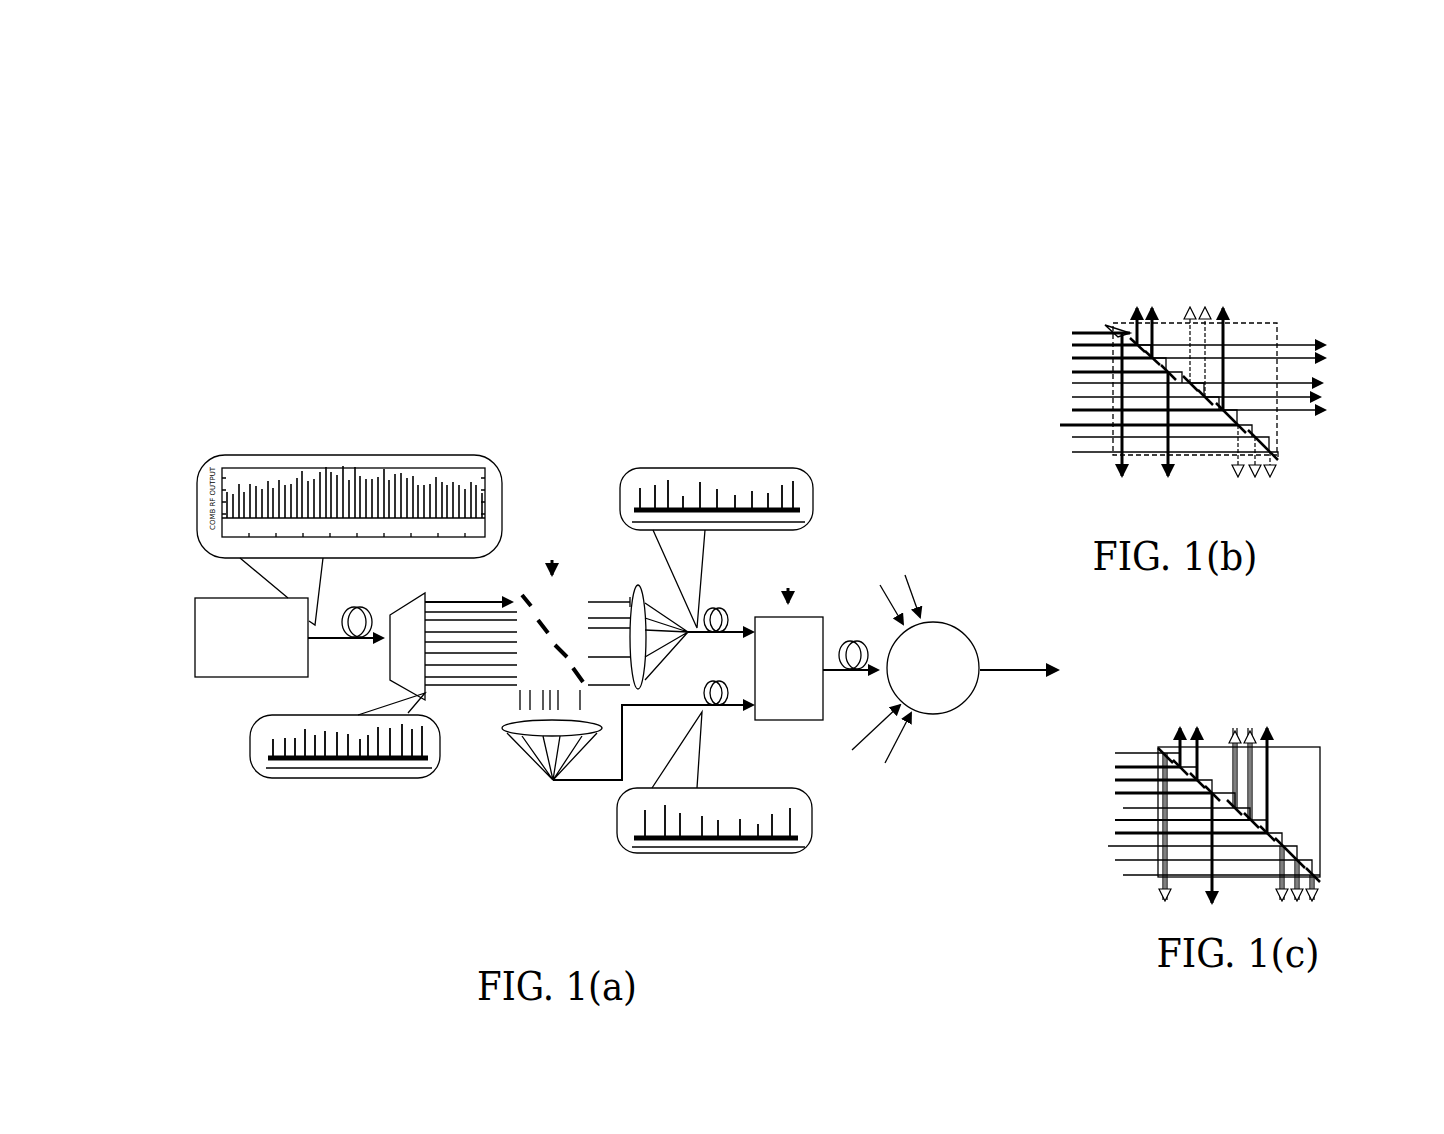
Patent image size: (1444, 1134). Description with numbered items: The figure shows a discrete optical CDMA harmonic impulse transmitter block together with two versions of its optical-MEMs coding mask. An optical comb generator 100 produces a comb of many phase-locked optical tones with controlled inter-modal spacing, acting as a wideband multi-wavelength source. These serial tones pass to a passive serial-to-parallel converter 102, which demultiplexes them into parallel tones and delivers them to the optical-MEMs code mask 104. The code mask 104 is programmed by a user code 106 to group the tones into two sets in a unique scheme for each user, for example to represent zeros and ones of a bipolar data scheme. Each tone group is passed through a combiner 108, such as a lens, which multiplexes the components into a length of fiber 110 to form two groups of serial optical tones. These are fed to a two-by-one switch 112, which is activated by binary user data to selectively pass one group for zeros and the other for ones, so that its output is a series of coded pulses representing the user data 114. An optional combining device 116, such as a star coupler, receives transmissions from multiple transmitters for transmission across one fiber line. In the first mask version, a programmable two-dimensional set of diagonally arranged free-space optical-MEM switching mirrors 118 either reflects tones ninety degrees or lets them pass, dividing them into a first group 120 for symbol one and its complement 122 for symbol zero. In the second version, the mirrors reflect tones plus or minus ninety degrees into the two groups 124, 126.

In FIG. 1A, the optical comb generator 100 is at (195, 630).
In FIG. 1A, the serial-to-parallel converter 102 is at (425, 693).
In FIG. 1A, the optical-MEMs code mask 104 is at (592, 585).
In FIG. 1B, the optical-MEMs code mask 104 is at (1273, 332).
In FIG. 1C, the optical-MEMs code mask 104 is at (1300, 663).
In FIG. 1A, the user code 106 is at (540, 502).
In FIG. 1A, the combiner 108 is at (523, 778).
In FIG. 1A, the fiber 110 is at (714, 608).
In FIG. 1A, the 2×1 switch 112 is at (770, 720).
In FIG. 1A, the user data 114 is at (645, 670).
In FIG. 1A, the combining device 116 is at (932, 715).
In FIG. 1B, the optical-MEM switching mirrors 118 is at (1278, 457).
In FIG. 1B, the first group 120 is at (1305, 358).
In FIG. 1B, the complement group 122 is at (1185, 477).
In FIG. 1C, the first tone group 124 is at (1158, 746).
In FIG. 1C, the second tone group 126 is at (1263, 888).